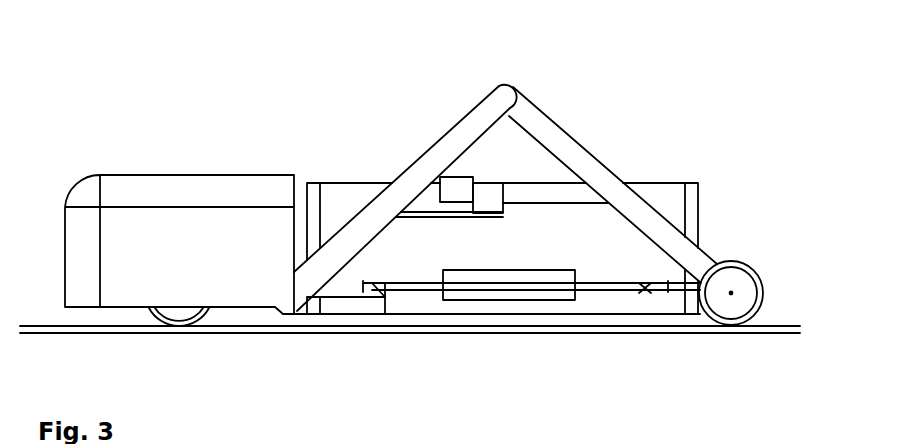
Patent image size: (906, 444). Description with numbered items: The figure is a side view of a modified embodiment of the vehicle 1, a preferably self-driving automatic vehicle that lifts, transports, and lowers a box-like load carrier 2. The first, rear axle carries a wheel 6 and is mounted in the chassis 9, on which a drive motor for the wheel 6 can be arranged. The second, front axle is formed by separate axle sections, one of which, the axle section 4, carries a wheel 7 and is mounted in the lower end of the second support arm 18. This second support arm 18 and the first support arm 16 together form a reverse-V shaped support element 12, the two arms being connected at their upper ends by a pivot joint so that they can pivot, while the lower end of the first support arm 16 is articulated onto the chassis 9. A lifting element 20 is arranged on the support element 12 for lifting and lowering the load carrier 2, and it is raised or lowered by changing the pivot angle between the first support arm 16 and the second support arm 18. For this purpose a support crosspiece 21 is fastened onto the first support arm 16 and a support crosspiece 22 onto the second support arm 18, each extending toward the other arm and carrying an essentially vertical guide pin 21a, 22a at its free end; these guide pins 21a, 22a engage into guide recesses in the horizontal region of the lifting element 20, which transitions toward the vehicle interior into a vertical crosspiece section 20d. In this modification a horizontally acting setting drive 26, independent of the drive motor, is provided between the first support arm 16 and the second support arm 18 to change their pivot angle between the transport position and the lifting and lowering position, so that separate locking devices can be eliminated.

The vehicle 1 is at (410, 178).
The load carrier 2 is at (693, 217).
The axle section 4 is at (731, 294).
The wheel 6 is at (177, 326).
The wheel 7 is at (760, 278).
The chassis 9 is at (223, 297).
The support element 12 is at (519, 83).
The first support arm 16 is at (412, 166).
The second support arm 18 is at (586, 160).
The lifting element 20 is at (490, 291).
The vertical crosspiece section 20d is at (506, 271).
The support crosspiece 21 is at (338, 298).
The guide pin 21a is at (385, 314).
The support crosspiece 22 is at (668, 290).
The guide pin 22a is at (643, 293).
The setting drive 26 is at (502, 196).